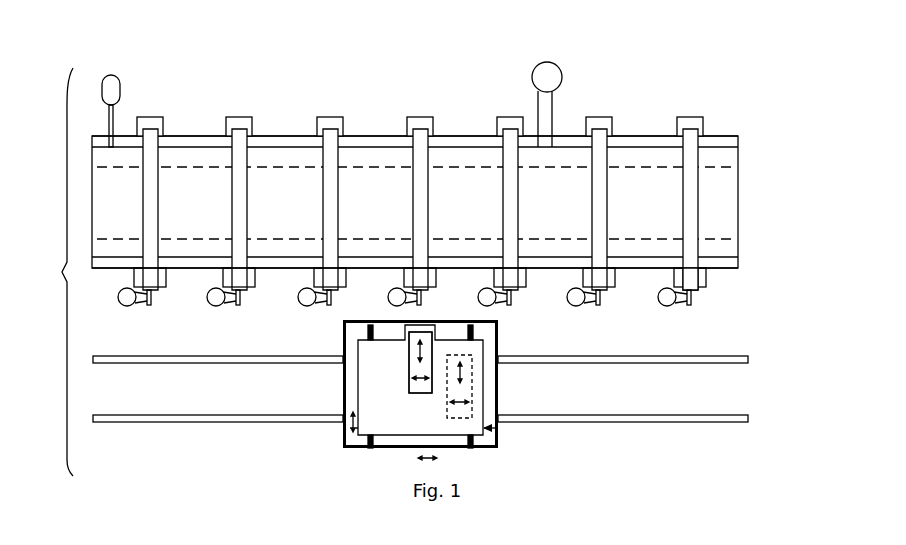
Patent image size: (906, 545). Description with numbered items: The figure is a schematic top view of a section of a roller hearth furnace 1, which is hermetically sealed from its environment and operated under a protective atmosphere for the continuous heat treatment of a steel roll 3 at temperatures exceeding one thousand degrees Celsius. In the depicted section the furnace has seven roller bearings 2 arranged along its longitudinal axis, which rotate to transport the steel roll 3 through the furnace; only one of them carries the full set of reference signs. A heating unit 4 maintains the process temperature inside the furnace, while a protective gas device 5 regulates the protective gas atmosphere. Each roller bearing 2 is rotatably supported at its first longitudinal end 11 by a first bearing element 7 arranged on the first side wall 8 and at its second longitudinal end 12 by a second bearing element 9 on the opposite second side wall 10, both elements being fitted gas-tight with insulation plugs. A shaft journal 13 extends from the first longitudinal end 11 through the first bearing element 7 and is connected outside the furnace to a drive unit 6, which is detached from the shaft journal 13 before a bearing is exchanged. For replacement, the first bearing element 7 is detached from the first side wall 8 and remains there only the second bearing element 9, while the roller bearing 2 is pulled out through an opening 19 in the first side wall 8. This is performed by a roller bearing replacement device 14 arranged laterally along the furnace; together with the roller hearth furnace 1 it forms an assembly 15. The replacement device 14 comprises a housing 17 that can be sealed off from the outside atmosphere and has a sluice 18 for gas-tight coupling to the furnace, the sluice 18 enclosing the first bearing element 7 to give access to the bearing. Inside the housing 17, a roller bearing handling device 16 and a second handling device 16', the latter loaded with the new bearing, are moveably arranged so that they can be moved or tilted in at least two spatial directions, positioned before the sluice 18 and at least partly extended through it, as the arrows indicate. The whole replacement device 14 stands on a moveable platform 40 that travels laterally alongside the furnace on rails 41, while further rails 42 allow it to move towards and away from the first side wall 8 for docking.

The roller hearth furnace 1 is at (278, 108).
The roller bearing 2 is at (688, 208).
The steel roll 3 is at (633, 200).
The heating unit 4 is at (116, 76).
The protective gas device 5 is at (562, 77).
The drive unit 6 is at (658, 296).
The first bearing element 7 is at (706, 276).
The first side wall 8 is at (200, 260).
The second bearing element 9 is at (689, 117).
The second side wall 10 is at (204, 143).
The first longitudinal end 11 is at (693, 278).
The second longitudinal end 12 is at (687, 140).
The shaft journal 13 is at (692, 300).
The roller bearing replacement device 14 is at (496, 430).
The assembly 15 is at (55, 272).
The roller bearing handling device 16 is at (356, 370).
The roller bearing handling device 16' is at (497, 386).
The housing 17 is at (358, 387).
The sluice 18 is at (434, 326).
The opening 19 is at (138, 262).
The moveable platform 40 is at (388, 440).
The rails 41 is at (735, 363).
The rails 42 is at (366, 332).